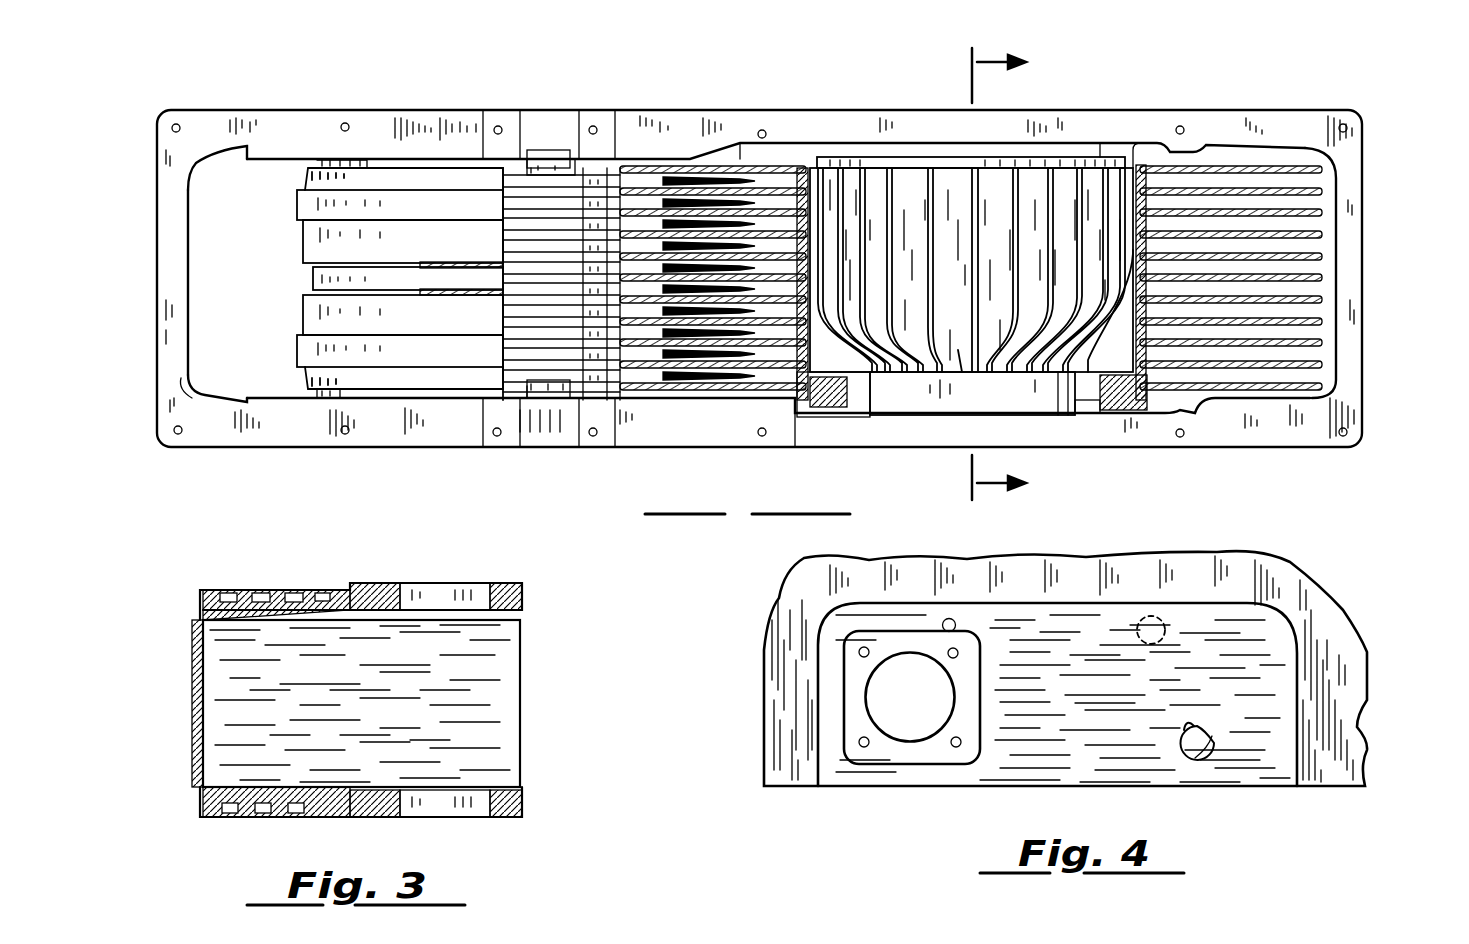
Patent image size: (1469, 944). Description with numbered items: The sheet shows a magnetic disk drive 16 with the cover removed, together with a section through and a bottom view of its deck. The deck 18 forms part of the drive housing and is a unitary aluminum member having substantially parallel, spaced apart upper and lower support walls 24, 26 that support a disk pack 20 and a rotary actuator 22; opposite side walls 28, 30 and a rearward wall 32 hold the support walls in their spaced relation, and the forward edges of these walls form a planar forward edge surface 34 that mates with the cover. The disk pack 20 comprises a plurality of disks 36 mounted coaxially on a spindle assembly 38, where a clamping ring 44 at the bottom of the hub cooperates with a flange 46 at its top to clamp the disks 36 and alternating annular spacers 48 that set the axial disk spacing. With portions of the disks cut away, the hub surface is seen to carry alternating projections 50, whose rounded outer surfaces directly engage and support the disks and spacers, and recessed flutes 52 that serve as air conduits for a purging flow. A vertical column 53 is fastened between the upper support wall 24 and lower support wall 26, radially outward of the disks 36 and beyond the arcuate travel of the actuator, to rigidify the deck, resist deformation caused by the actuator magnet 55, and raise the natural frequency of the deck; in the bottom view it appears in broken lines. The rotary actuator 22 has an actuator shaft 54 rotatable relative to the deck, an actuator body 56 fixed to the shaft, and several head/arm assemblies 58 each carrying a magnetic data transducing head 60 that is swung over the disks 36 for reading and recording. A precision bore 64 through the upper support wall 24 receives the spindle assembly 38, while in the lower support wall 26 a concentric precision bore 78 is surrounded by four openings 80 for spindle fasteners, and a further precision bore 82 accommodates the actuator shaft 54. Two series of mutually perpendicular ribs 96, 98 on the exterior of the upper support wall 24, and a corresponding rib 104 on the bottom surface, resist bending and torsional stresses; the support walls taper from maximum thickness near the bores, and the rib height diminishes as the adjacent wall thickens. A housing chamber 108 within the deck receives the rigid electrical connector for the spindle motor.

In FIG. 1, the magnetic disk drive 16 is at (482, 86).
In FIG. 1, the deck 18 is at (1052, 112).
In FIG. 1, the disk pack 20 is at (787, 163).
In FIG. 1, the rotary actuator 22 is at (323, 282).
In FIG. 1, the upper support wall 24 is at (650, 128).
In FIG. 3, the upper support wall 24 is at (347, 610).
In FIG. 1, the lower support wall 26 is at (403, 420).
In FIG. 3, the lower support wall 26 is at (282, 793).
In FIG. 4, the lower support wall 26 is at (1130, 762).
In FIG. 1, the side wall 28 is at (170, 283).
In FIG. 1, the side wall 30 is at (1347, 280).
In FIG. 1, the rearward wall 32 is at (212, 192).
In FIG. 3, the rearward wall 32 is at (203, 702).
In FIG. 1, the forward edge surface 34 is at (1277, 423).
In FIG. 1, the disks 36 is at (1313, 207).
In FIG. 1, the spindle assembly 38 is at (905, 175).
In FIG. 1, the clamping ring 44 is at (820, 400).
In FIG. 1, the flange 46 is at (1140, 157).
In FIG. 1, the annular spacers 48 is at (1147, 377).
In FIG. 1, the projections 50 is at (968, 352).
In FIG. 1, the flutes 52 is at (997, 243).
In FIG. 1, the column 53 is at (597, 400).
In FIG. 4, the column 53 is at (1153, 622).
In FIG. 1, the actuator shaft 54 is at (550, 150).
In FIG. 1, the actuator magnet 55 is at (313, 205).
In FIG. 1, the actuator body 56 is at (503, 280).
In FIG. 1, the head/arm assemblies 58 is at (735, 386).
In FIG. 1, the magnetic data transducing head 60 is at (745, 175).
In FIG. 3, the precision bore 64 is at (415, 590).
In FIG. 3, the precision bore 78 is at (413, 813).
In FIG. 4, the precision bore 78 is at (867, 700).
In FIG. 4, the openings 80 is at (862, 650).
In FIG. 4, the precision bore 82 is at (1203, 738).
In FIG. 3, the ribs 96 is at (282, 590).
In FIG. 3, the ribs 98 is at (227, 595).
In FIG. 3, the rib 104 is at (248, 813).
In FIG. 1, the housing chamber 108 is at (192, 386).